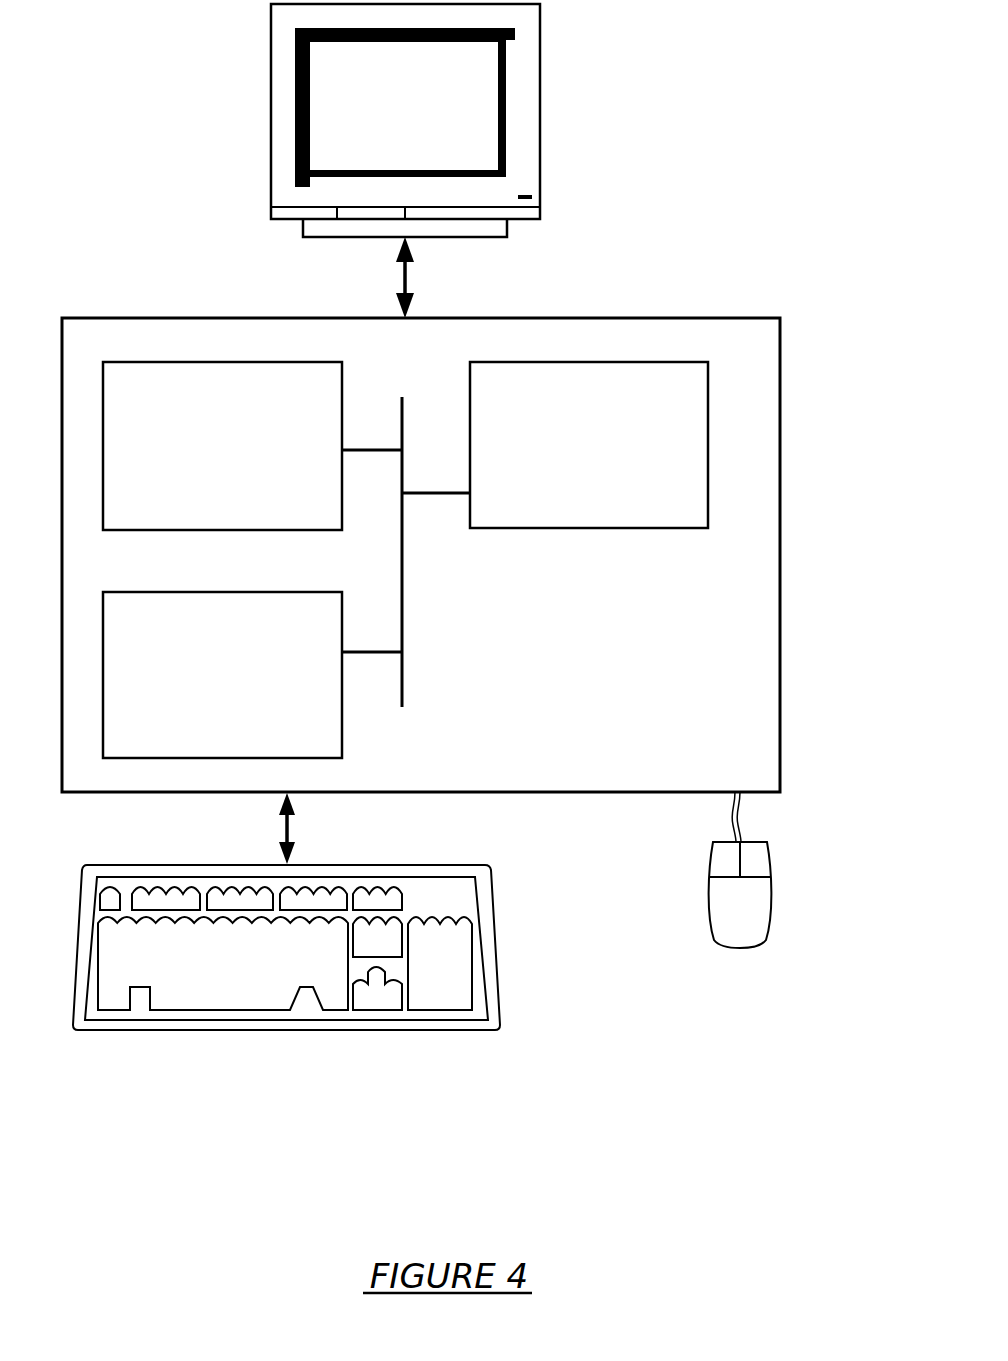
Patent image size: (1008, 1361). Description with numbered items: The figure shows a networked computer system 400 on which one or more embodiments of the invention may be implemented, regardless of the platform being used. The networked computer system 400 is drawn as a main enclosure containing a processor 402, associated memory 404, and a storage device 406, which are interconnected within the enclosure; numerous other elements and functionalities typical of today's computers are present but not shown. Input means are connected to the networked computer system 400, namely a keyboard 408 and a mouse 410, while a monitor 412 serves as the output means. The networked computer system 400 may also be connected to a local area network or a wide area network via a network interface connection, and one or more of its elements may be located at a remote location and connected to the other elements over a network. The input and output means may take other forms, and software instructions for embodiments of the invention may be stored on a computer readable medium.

The networked computer system 400 is at (798, 168).
The processor 402 is at (568, 458).
The associated memory 404 is at (201, 457).
The storage device 406 is at (198, 688).
The keyboard 408 is at (240, 982).
The mouse 410 is at (717, 918).
The monitor 412 is at (427, 125).